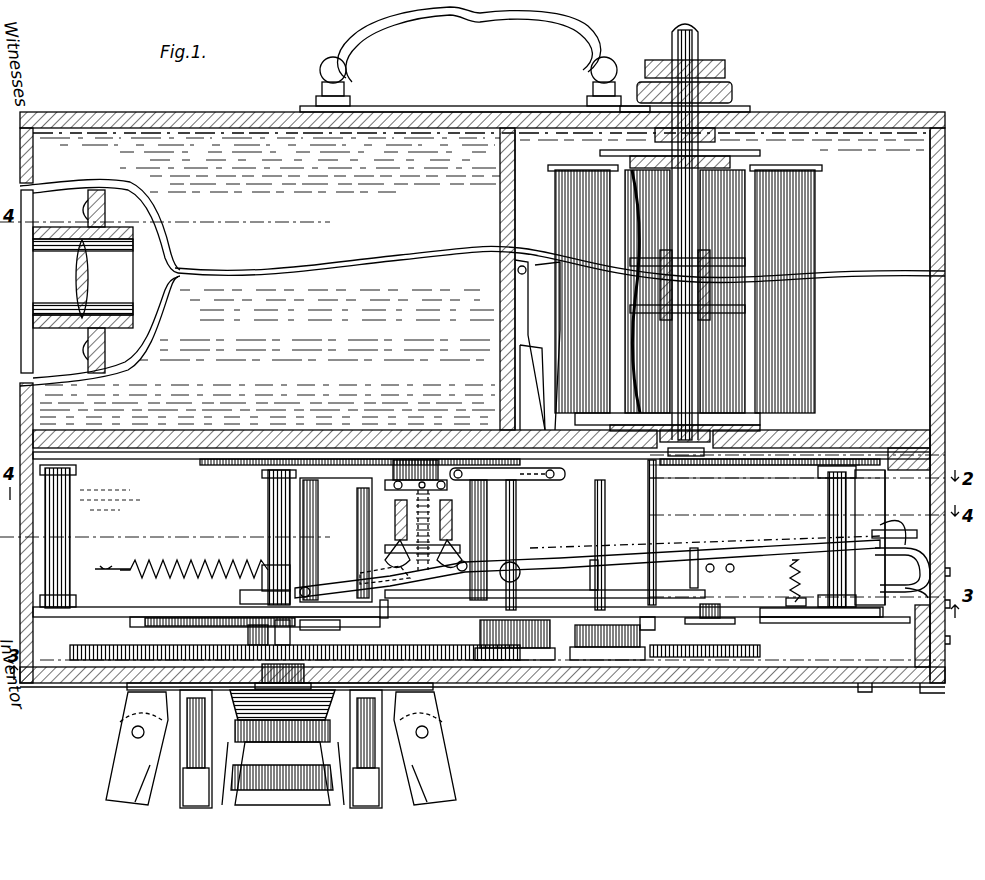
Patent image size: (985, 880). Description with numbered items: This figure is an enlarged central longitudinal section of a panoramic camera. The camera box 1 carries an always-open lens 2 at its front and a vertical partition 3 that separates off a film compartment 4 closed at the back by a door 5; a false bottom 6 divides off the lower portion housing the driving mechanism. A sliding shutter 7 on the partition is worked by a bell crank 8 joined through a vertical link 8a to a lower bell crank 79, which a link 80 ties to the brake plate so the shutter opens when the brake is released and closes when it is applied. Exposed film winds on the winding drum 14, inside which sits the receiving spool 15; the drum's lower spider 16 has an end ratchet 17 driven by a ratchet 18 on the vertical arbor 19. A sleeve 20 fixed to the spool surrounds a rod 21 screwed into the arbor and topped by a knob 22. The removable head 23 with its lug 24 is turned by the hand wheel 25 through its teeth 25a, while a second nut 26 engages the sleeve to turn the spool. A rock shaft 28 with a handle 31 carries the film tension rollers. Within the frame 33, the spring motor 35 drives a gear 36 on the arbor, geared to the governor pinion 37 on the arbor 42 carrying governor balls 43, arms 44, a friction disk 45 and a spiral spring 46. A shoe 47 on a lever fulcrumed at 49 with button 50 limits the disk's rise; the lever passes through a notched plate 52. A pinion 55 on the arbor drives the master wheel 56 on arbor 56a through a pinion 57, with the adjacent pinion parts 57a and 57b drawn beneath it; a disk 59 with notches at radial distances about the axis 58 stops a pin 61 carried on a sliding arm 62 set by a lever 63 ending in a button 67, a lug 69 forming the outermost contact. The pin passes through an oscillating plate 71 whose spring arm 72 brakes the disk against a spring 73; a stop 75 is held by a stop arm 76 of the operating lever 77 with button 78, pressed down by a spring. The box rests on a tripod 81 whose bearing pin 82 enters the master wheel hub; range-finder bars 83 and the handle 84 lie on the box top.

The camera box or case 1 is at (152, 122).
The lens 2 is at (70, 286).
The vertical partition 3 is at (500, 150).
The compartment 4 is at (533, 280).
The door or closure 5 is at (940, 188).
The false bottom or partition 6 is at (140, 424).
The shutter 7 is at (512, 340).
The bell crank 8 is at (510, 268).
The vertical link 8a is at (520, 352).
The winding drum or cylinder 14 is at (812, 382).
The receiving spool 15 is at (716, 296).
The bearing member or spider 16 is at (775, 428).
The end ratchet 17 is at (700, 428).
The end ratchet 18 is at (665, 450).
The vertical shaft or arbor 19 is at (682, 532).
The sleeve 20 is at (695, 218).
The rod 21 is at (698, 242).
The knob 22 is at (700, 34).
The head or spider 23 is at (770, 124).
The lug 24 is at (694, 132).
The hand wheel or nut 25 is at (733, 94).
The engaging teeth or projections 25a is at (715, 160).
The second hand wheel or nut 26 is at (726, 68).
The vertical rock shaft 28 is at (806, 592).
The arm or handle 31 is at (322, 470).
The frame 33 is at (120, 465).
The motor or spring 35 is at (336, 540).
The second gear 36 is at (826, 474).
The governor pinion 37 is at (415, 462).
The vertical arbor 42 is at (429, 540).
The centrifugal governor balls 43 is at (460, 548).
The arms 44 is at (395, 510).
The friction disk 45 is at (545, 594).
The spiral spring 46 is at (455, 520).
The shoe 47 is at (582, 545).
The fulcrum 49 is at (522, 572).
The button 50 is at (922, 568).
The plate 52 is at (881, 537).
The pinion 55 is at (742, 650).
The master wheel 56 is at (70, 651).
The arbor 56a is at (275, 494).
The pinion 57 is at (600, 663).
The pawl 57a is at (658, 640).
The pawl rod 57b is at (622, 582).
The axis 58 is at (505, 660).
The disk 59 is at (166, 622).
The radially adjustable pin 61 is at (248, 636).
The radially movable arm 62 is at (240, 596).
The irregular-shaped lever 63 is at (735, 568).
The button or enlargement 67 is at (935, 588).
The projecting lug 69 is at (327, 633).
The oscillating plate 71 is at (257, 579).
The arm 72 is at (384, 603).
The spring 73 is at (160, 562).
The projection or stop 75 is at (718, 612).
The stop arm 76 is at (700, 572).
The lever 77 is at (640, 552).
The operating button 78 is at (910, 528).
The spring 79 is at (532, 482).
The link 80 is at (587, 569).
The tripod 81 is at (315, 804).
The bearing pin 82 is at (283, 676).
The metallic bars 83 is at (845, 118).
The handle 84 is at (455, 25).